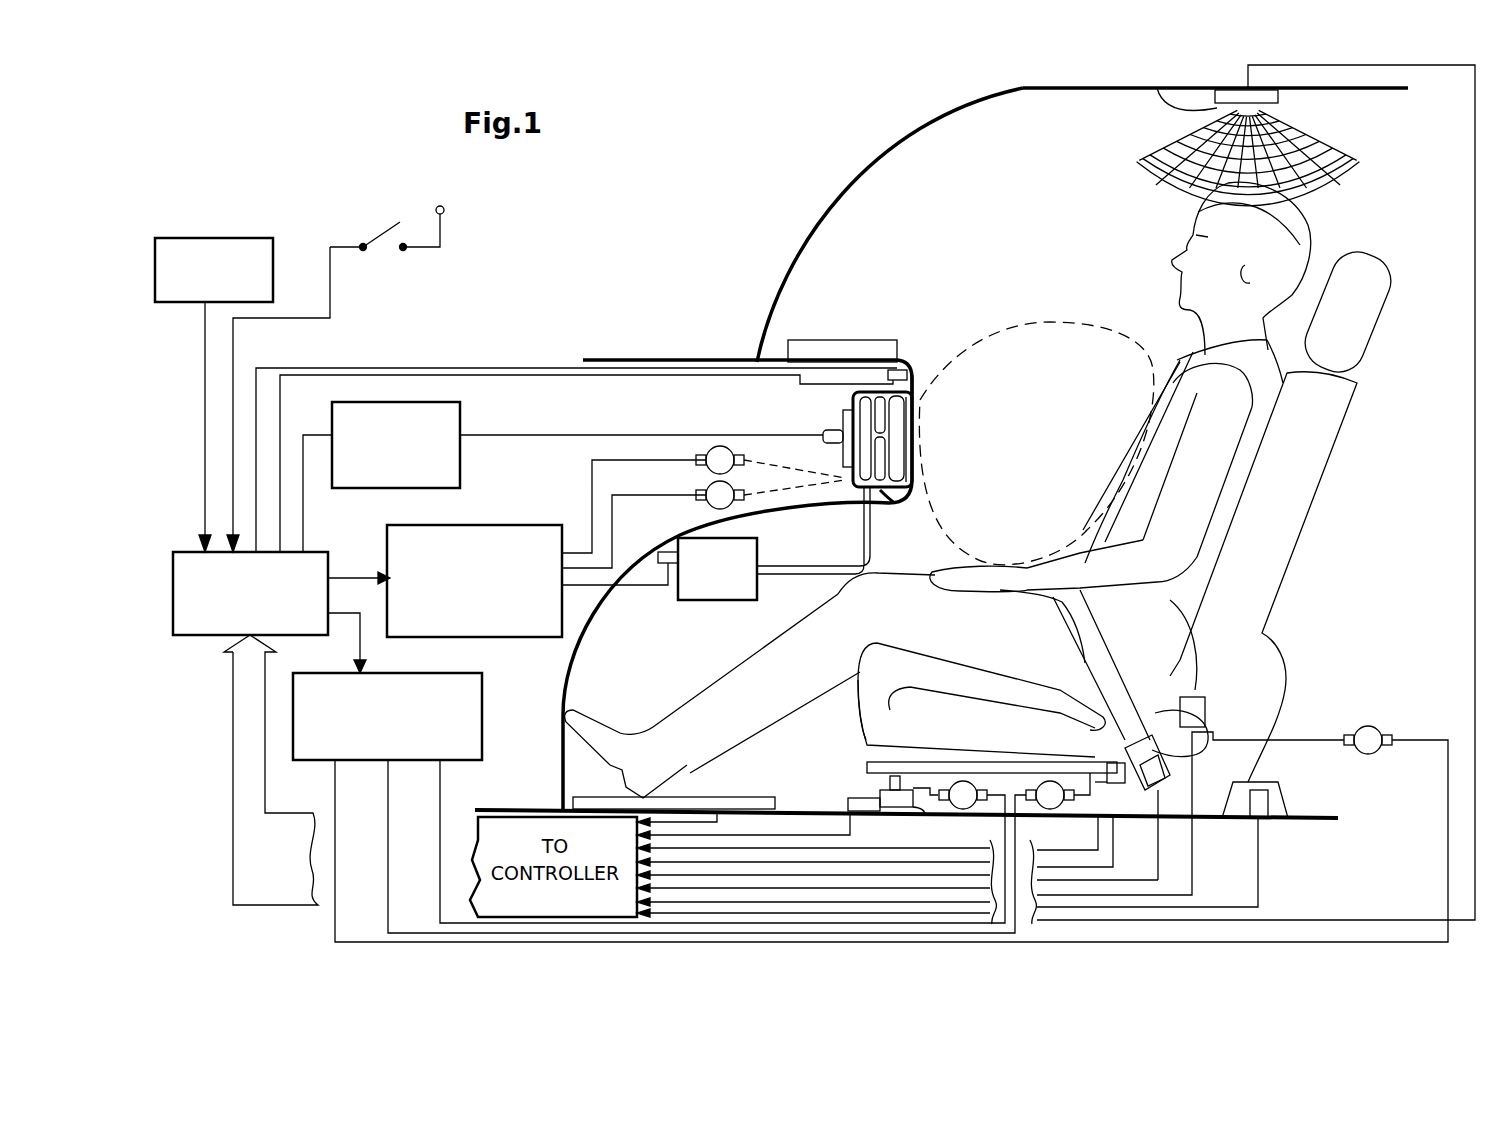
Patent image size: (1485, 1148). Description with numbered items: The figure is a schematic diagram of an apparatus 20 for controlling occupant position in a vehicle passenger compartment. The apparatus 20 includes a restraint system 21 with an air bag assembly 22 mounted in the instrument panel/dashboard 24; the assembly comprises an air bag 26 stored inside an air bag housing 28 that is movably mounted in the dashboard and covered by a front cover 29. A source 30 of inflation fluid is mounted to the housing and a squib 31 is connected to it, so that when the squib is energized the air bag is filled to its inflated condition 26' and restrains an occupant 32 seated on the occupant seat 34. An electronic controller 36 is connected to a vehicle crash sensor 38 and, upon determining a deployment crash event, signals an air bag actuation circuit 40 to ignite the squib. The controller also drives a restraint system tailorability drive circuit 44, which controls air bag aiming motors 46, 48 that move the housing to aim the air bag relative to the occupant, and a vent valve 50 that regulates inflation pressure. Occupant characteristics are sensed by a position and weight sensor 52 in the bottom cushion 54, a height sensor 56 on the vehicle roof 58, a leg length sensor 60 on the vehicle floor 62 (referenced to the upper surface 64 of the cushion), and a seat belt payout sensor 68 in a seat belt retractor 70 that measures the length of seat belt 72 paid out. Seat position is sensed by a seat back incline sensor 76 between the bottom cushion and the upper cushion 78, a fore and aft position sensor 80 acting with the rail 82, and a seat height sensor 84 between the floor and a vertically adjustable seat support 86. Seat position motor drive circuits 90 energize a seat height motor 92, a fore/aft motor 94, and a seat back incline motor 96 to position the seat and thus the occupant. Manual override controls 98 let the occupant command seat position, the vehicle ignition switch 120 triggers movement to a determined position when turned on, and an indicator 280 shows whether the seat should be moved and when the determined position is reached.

The apparatus 20 is at (698, 252).
The restraint system 21 is at (729, 342).
The air bag assembly 22 is at (921, 368).
The instrument panel/dashboard 24 is at (930, 352).
The air bag 26 is at (929, 438).
The inflated condition of the air bag 26' is at (1036, 417).
The air bag housing 28 is at (888, 505).
The front cover 29 is at (913, 427).
The source of inflation fluid 30 is at (845, 465).
The squib 31 is at (828, 431).
The occupant 32 is at (1308, 232).
The occupant seat 34 is at (1372, 422).
The electronic controller 36 is at (190, 566).
The vehicle crash sensor 38 is at (262, 243).
The air bag actuation circuit 40 is at (455, 471).
The restraint system tailorability drive circuit 44 is at (545, 530).
The air bag aiming motor 46 is at (700, 466).
The air bag aiming motor 48 is at (703, 500).
The vent valve 50 is at (712, 600).
The occupant position and weight sensor 52 is at (905, 689).
The bottom cushion 54 is at (850, 703).
The height sensor 56 is at (1214, 100).
The vehicle roof 58 is at (1087, 86).
The leg length sensor 60 is at (720, 793).
The vehicle floor 62 is at (816, 812).
The upper surface of bottom cushion 64 is at (899, 642).
The seat belt payout sensor 68 is at (1259, 805).
The seat belt retractor 70 is at (1287, 798).
The seat belt 72 is at (1082, 642).
The seat back incline sensor 76 is at (1193, 700).
The upper or seat back cushion 78 is at (1297, 549).
The seat fore and aft position sensor 80 is at (1083, 750).
The rail 82 is at (870, 765).
The seat height sensor 84 is at (925, 816).
The vertically adjustable seat support 86 is at (880, 788).
The seat position motor drive circuits 90 is at (475, 712).
The seat height adjustment motor 92 is at (979, 810).
The seat fore/aft position motor 94 is at (1066, 808).
The seat back incline motor 96 is at (1376, 754).
The occupant seat position manual/override controls 98 is at (833, 341).
The vehicle ignition switch 120 is at (380, 231).
The indicator 280 is at (935, 377).